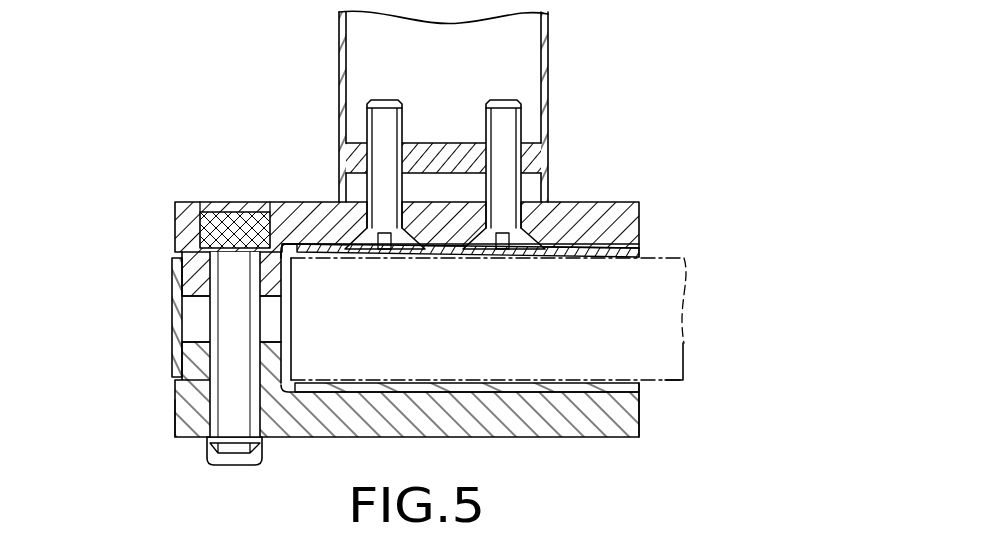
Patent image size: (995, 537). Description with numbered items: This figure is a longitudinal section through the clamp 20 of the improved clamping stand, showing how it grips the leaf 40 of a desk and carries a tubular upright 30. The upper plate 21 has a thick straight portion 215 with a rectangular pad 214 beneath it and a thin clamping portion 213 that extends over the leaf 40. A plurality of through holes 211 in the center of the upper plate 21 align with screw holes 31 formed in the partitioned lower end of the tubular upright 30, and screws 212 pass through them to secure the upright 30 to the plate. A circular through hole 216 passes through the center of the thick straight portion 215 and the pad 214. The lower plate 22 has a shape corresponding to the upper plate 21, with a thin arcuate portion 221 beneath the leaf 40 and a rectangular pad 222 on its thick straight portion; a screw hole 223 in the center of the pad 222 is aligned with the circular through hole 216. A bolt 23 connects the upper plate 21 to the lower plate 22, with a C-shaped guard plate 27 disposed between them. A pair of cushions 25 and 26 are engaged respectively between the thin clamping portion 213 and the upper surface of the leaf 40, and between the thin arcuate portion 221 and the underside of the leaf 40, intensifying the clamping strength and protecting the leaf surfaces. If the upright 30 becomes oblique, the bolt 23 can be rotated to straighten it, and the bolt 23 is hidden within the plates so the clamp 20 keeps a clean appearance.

The clamp 20 is at (393, 293).
The upper plate 21 is at (627, 227).
The through holes 211 is at (522, 212).
The screws 212 is at (520, 120).
The thin clamping portion 213 is at (622, 247).
The rectangular pad 214 is at (178, 300).
The thick straight portion 215 is at (175, 257).
The circular through hole 216 is at (175, 216).
The lower plate 22 is at (641, 428).
The thin arcuate portion 221 is at (641, 398).
The rectangular pad 222 is at (187, 340).
The screw hole 223 is at (210, 407).
The bolt 23 is at (233, 385).
The cushion 25 is at (640, 255).
The cushion 26 is at (640, 385).
The C-shaped guard plate 27 is at (175, 320).
The tubular upright 30 is at (555, 53).
The screw holes 31 is at (523, 162).
The leaf 40 is at (665, 316).